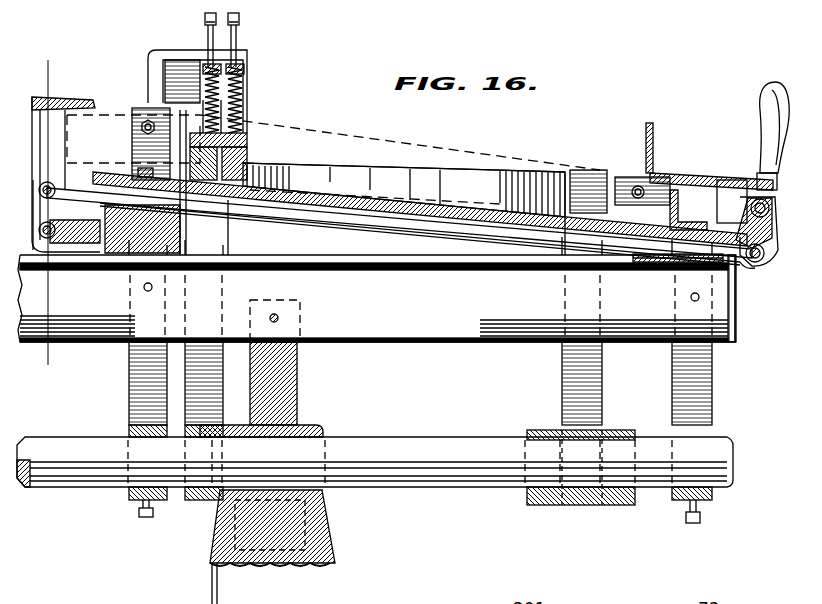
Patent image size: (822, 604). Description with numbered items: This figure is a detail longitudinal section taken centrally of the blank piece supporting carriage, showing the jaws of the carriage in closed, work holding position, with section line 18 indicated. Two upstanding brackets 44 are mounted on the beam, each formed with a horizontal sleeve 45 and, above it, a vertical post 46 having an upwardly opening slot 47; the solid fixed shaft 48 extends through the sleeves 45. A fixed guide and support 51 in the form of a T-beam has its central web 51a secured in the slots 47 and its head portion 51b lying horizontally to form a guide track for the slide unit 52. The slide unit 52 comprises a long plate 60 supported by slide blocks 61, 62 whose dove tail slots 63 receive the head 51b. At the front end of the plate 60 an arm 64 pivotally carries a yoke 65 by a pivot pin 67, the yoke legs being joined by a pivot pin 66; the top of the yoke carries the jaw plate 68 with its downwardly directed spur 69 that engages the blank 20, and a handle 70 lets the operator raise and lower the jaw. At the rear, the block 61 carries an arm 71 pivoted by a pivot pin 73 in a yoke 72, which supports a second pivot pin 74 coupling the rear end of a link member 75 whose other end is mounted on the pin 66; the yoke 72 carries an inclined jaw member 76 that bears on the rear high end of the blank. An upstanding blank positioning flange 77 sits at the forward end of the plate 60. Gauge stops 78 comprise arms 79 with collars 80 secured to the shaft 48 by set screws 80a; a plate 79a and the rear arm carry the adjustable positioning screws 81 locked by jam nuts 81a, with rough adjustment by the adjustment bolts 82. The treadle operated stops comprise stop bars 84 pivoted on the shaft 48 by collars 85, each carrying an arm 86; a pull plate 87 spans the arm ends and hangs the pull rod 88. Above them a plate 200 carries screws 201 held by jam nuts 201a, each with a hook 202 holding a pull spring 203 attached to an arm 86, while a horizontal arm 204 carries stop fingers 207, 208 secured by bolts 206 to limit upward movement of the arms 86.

The section line 18 is at (40, 81).
The stave piece 20 is at (426, 152).
The upstanding bracket 44 is at (332, 528).
The sleeve 45 is at (324, 430).
The post 46 is at (298, 404).
The slot 47 is at (302, 345).
The fixed shaft 48 is at (431, 488).
The guide and support 51 is at (736, 337).
The central web 51a is at (386, 343).
The head portion 51b is at (412, 272).
The slide unit 52 is at (386, 185).
The plate 60 is at (338, 166).
The slide block 61 is at (125, 256).
The slide block 62 is at (662, 264).
The dove tail slot 63 is at (190, 256).
The arm 64 is at (742, 228).
The yoke 65 is at (772, 200).
The pivot pin 66 is at (760, 268).
The pivot pin 67 is at (776, 228).
The plate 68 is at (735, 178).
The spur 69 is at (654, 150).
The handle 70 is at (762, 100).
The arm 71 is at (80, 256).
The yoke 72 is at (35, 100).
The pivot pin 73 is at (58, 222).
The pivot pin 74 is at (63, 181).
The link member 75 is at (352, 224).
The jaw member 76 is at (88, 104).
The blank positioning flange 77 is at (676, 190).
The gauge stop 78 is at (122, 133).
The arm 79 is at (128, 372).
The plate 79a is at (590, 170).
The collar 80 is at (130, 494).
The set screw 80a is at (143, 518).
The adjustable positioning screw 81 is at (144, 121).
The jam nut 81a is at (140, 122).
The adjustment bolt 82 is at (152, 289).
The stop bar 84 is at (190, 345).
The collar 85 is at (186, 500).
The arm 86 is at (278, 165).
The pull plate 87 is at (248, 140).
The pull rod 88 is at (211, 590).
The plate 200 is at (165, 52).
The screw 201 is at (238, 28).
The jam nut 201a is at (234, 30).
The hook 202 is at (246, 55).
The pull spring 203 is at (242, 92).
The arm 204 is at (165, 75).
The bolt 206 is at (220, 76).
The stop finger 207 is at (247, 128).
The stop finger 208 is at (222, 104).